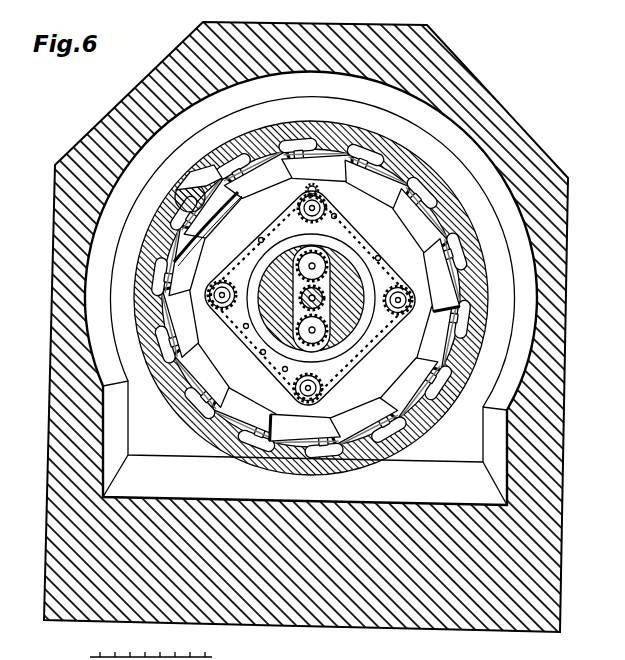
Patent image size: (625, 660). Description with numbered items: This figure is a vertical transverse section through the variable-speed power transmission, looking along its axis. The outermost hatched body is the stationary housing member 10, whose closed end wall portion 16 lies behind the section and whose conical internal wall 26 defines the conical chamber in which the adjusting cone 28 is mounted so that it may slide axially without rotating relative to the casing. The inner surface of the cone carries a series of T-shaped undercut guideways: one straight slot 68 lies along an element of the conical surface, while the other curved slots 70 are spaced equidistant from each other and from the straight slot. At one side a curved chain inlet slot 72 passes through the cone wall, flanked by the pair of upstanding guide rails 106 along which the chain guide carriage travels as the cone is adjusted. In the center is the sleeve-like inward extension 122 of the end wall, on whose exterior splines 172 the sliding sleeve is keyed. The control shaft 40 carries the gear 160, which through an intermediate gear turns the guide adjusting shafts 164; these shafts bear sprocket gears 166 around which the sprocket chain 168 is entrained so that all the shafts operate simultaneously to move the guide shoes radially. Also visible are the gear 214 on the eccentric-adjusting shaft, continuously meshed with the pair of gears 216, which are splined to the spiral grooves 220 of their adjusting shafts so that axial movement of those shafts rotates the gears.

The housing member 10 is at (463, 80).
The closed end wall portion 16 is at (118, 335).
The conical internal wall 26 is at (493, 176).
The adjusting cone 28 is at (418, 413).
The control shaft 40 is at (321, 184).
The straight slot 68 is at (375, 410).
The curved slots 70 is at (420, 363).
The chain inlet slot 72 is at (173, 233).
The guide rails 106 is at (178, 174).
The sleeve-like inward extension 122 is at (244, 328).
The gear 160 is at (305, 192).
The guide adjusting shafts 164 is at (327, 209).
The sprocket gears 166 is at (337, 216).
The sprocket chain 168 is at (261, 353).
The splines 172 is at (307, 238).
The gear 214 is at (324, 306).
The gears 216 is at (320, 288).
The spiral grooves 220 is at (259, 240).